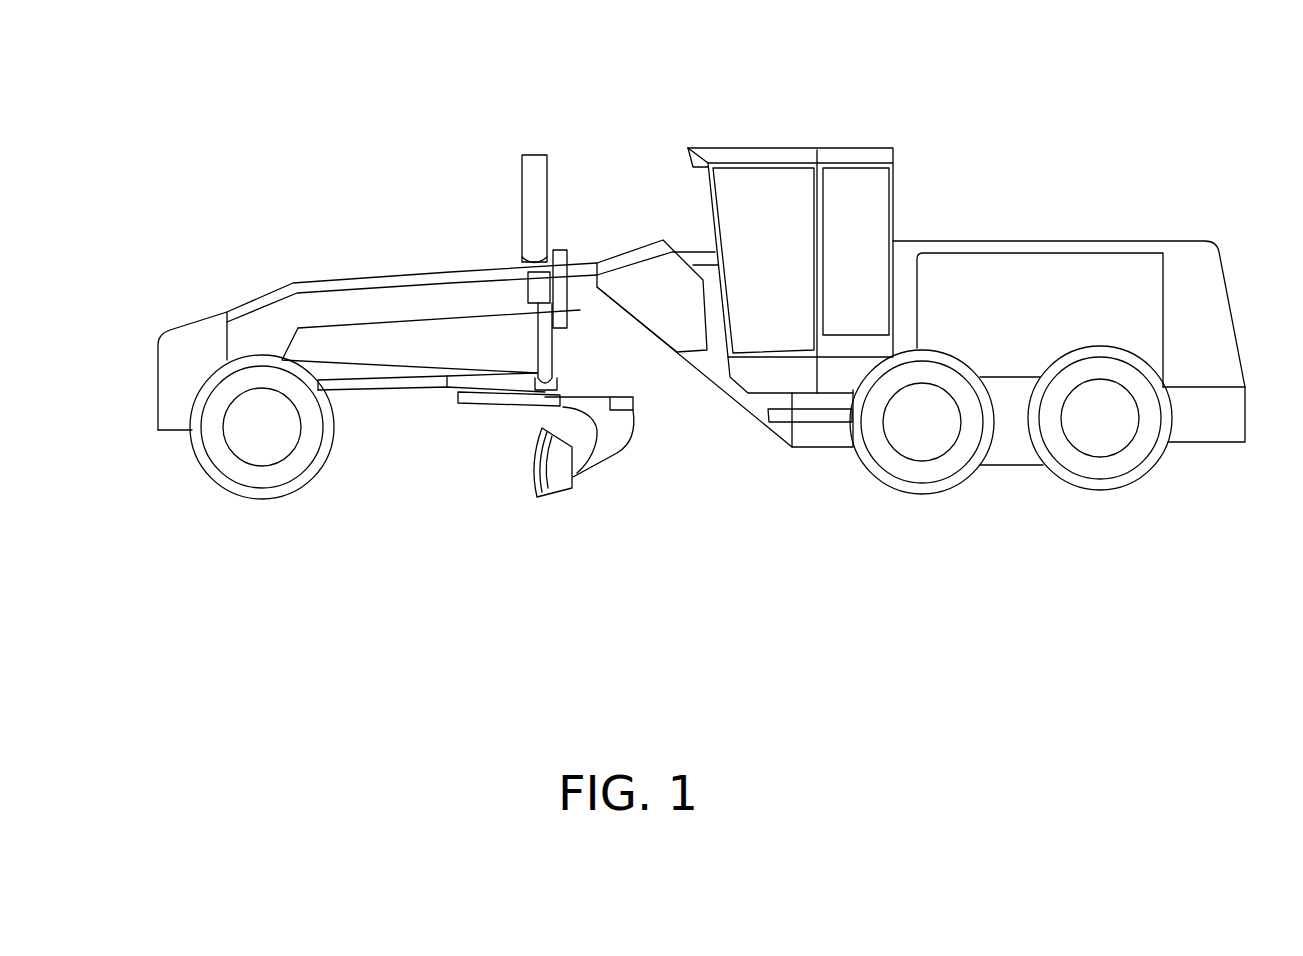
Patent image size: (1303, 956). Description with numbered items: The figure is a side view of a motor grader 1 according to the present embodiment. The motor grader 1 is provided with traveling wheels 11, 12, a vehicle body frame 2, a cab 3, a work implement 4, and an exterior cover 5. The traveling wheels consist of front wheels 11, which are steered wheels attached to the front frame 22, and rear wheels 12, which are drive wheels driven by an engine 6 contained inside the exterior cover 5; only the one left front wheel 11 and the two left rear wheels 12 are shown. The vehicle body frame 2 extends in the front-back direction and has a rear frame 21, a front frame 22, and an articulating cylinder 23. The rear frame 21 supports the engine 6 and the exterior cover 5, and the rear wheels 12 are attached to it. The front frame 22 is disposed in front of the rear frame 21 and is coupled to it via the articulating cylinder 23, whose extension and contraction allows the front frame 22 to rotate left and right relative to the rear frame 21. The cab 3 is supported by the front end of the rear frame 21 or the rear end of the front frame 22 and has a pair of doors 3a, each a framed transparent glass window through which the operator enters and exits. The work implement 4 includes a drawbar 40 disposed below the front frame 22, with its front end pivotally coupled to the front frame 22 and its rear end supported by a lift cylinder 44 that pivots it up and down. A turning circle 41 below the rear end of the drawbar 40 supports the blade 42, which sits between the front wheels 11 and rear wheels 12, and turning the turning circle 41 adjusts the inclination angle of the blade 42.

The motor grader 1 is at (377, 123).
The vehicle body frame 2 is at (647, 218).
The cab 3 is at (838, 148).
The door 3a is at (762, 203).
The work implement 4 is at (522, 493).
The exterior cover 5 is at (1097, 240).
The engine 6 is at (1030, 285).
The front wheel 11 is at (264, 478).
The rear wheel 12 is at (925, 470).
The rear frame 21 is at (1013, 450).
The front frame 22 is at (450, 300).
The articulating cylinder 23 is at (823, 413).
The drawbar 40 is at (380, 375).
The turning circle 41 is at (482, 398).
The blade 42 is at (552, 480).
The lift cylinder 44 is at (532, 175).